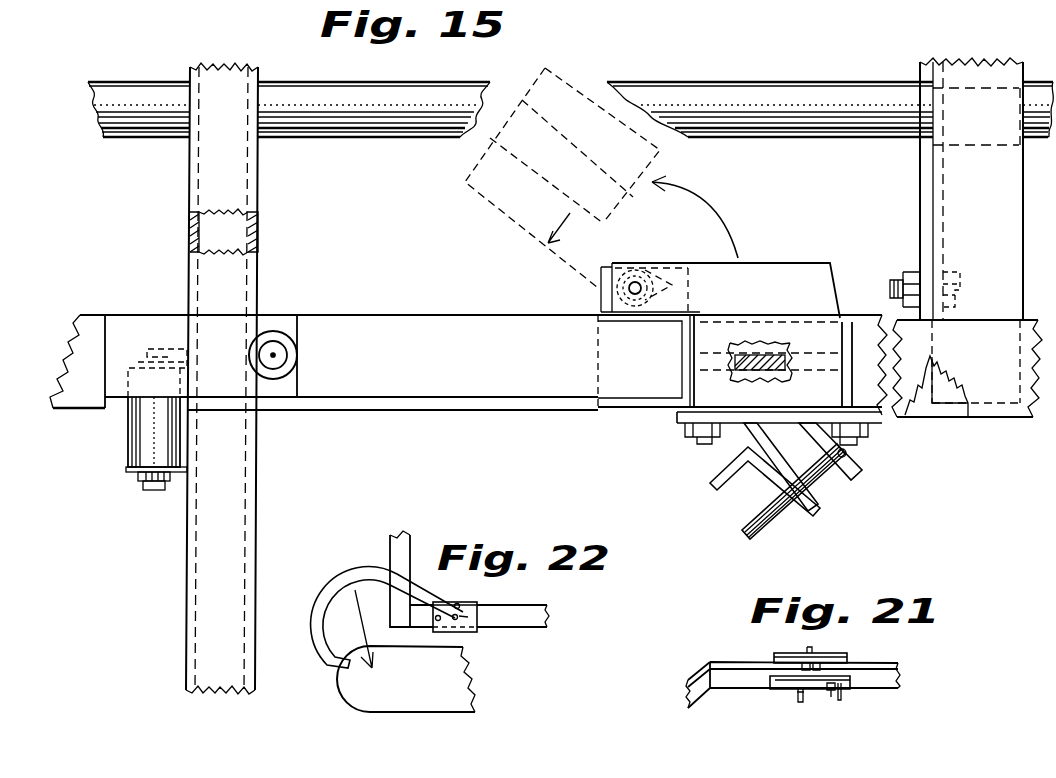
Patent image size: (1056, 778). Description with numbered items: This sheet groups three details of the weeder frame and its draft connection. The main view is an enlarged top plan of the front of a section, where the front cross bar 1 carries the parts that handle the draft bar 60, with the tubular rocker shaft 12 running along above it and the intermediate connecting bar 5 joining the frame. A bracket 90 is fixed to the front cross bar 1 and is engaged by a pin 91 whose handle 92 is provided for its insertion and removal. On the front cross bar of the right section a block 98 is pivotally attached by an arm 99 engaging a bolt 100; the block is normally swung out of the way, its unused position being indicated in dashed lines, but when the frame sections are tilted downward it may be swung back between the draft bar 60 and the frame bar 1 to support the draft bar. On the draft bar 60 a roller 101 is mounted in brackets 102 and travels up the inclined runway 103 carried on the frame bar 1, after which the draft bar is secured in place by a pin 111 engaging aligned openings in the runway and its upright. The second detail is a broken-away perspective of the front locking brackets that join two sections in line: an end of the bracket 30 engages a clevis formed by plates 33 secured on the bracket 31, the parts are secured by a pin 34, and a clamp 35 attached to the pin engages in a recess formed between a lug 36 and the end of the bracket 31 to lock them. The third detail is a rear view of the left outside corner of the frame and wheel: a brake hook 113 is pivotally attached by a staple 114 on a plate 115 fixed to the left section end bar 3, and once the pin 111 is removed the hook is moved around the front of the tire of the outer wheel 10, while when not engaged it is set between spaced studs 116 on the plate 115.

In FIG. 15, the front cross bar 1 is at (477, 412).
In FIG. 22, the front cross bar 1 is at (401, 536).
In FIG. 22, the end bar 3 is at (547, 604).
In FIG. 15, the intermediate connecting bar 5 is at (988, 237).
In FIG. 22, the outer wheel 10 is at (452, 670).
In FIG. 15, the rocker shaft 12 is at (160, 128).
In FIG. 21, the bracket 30 is at (685, 685).
In FIG. 21, the bracket 31 is at (870, 663).
In FIG. 21, the plates 33 is at (793, 653).
In FIG. 21, the pin 34 is at (800, 702).
In FIG. 21, the clamp 35 is at (842, 698).
In FIG. 21, the lug 36 is at (829, 695).
In FIG. 15, the draft bar 60 is at (233, 500).
In FIG. 15, the bracket 90 is at (853, 478).
In FIG. 15, the pin 91 is at (770, 503).
In FIG. 15, the handle 92 is at (710, 478).
In FIG. 15, the block 98 is at (759, 278).
In FIG. 15, the arm 99 is at (600, 289).
In FIG. 15, the bolt 100 is at (633, 287).
In FIG. 15, the roller 101 is at (128, 452).
In FIG. 15, the brackets 102 is at (135, 481).
In FIG. 15, the inclined runway 103 is at (297, 315).
In FIG. 15, the pin 111 is at (273, 355).
In FIG. 22, the brake hook 113 is at (331, 581).
In FIG. 22, the staple 114 is at (478, 628).
In FIG. 22, the plate 115 is at (477, 602).
In FIG. 22, the studs 116 is at (455, 604).